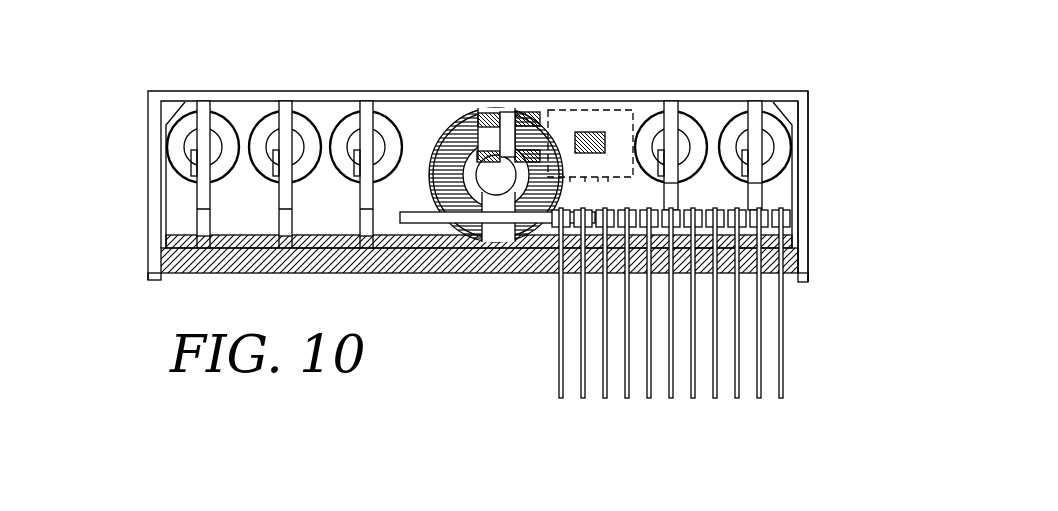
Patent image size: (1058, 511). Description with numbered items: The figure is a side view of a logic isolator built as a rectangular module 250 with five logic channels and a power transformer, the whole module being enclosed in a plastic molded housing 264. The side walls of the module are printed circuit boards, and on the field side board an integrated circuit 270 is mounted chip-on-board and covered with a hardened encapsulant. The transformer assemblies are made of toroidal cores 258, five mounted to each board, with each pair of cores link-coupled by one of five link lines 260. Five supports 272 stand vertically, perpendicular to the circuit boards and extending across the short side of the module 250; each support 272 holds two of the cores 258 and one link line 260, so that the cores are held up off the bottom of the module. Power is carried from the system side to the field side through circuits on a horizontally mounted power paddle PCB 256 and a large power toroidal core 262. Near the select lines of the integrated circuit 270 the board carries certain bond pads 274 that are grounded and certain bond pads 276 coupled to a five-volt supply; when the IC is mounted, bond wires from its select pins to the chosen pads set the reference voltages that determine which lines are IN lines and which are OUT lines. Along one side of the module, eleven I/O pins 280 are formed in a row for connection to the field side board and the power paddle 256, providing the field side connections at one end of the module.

The rectangular module 250 is at (829, 59).
The power paddle PCB 256 is at (417, 223).
The toroidal cores 258 is at (661, 110).
The link lines 260 is at (655, 150).
The large power toroidal core 262 is at (452, 127).
The plastic molded housing 264 is at (810, 150).
The integrated circuit 270 is at (582, 132).
The supports 272 is at (205, 123).
The bond pads 274 is at (570, 177).
The bond pads 276 is at (585, 177).
The I/O pins 280 is at (790, 402).